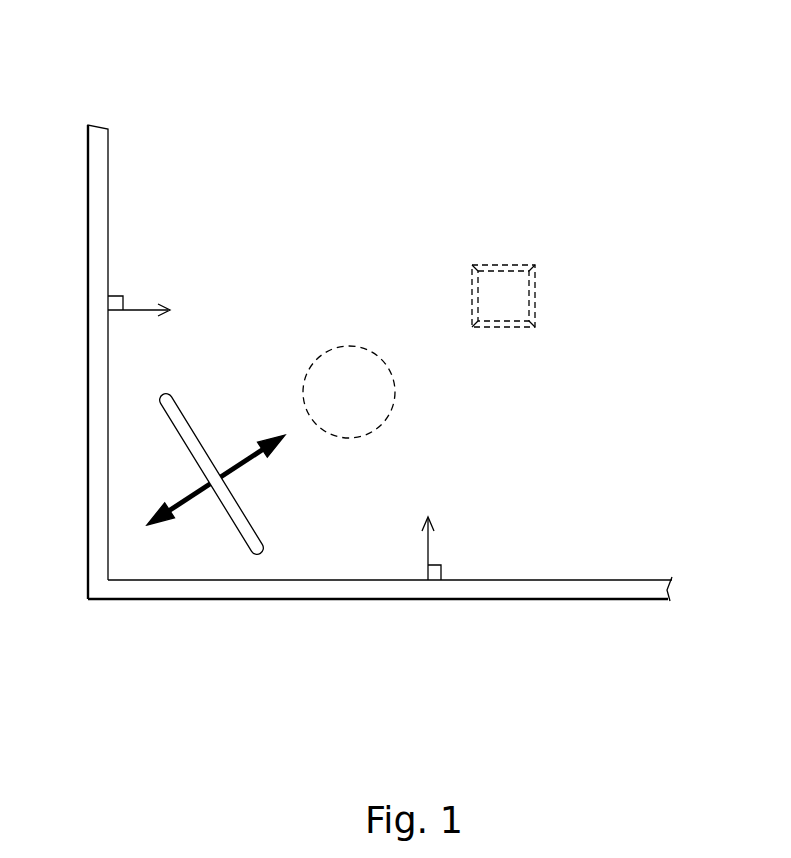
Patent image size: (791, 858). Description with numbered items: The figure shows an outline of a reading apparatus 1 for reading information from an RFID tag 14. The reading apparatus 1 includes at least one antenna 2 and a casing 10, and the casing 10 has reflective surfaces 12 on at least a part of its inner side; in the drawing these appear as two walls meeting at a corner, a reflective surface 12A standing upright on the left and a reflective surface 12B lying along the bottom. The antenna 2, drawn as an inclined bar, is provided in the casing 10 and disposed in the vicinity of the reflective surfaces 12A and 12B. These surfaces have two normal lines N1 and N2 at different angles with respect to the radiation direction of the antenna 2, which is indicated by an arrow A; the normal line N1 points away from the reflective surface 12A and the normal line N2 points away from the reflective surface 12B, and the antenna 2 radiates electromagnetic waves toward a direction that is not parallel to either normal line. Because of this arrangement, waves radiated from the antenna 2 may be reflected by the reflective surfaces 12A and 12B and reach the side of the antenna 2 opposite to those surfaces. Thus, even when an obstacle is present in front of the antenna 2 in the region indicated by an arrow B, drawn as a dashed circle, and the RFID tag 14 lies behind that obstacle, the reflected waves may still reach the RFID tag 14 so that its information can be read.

The reading apparatus 1 is at (205, 75).
The casing 10 is at (120, 652).
The reflective surfaces 12 is at (359, 354).
The reflective surface 12A is at (108, 150).
The reflective surface 12B is at (333, 580).
The RFID tag 14 is at (505, 262).
The antenna 2 is at (258, 523).
The arrow indicating radiation direction A is at (238, 455).
The arrow indicating obstacle region B is at (351, 346).
The normal line N1 is at (141, 291).
The normal line N2 is at (445, 546).